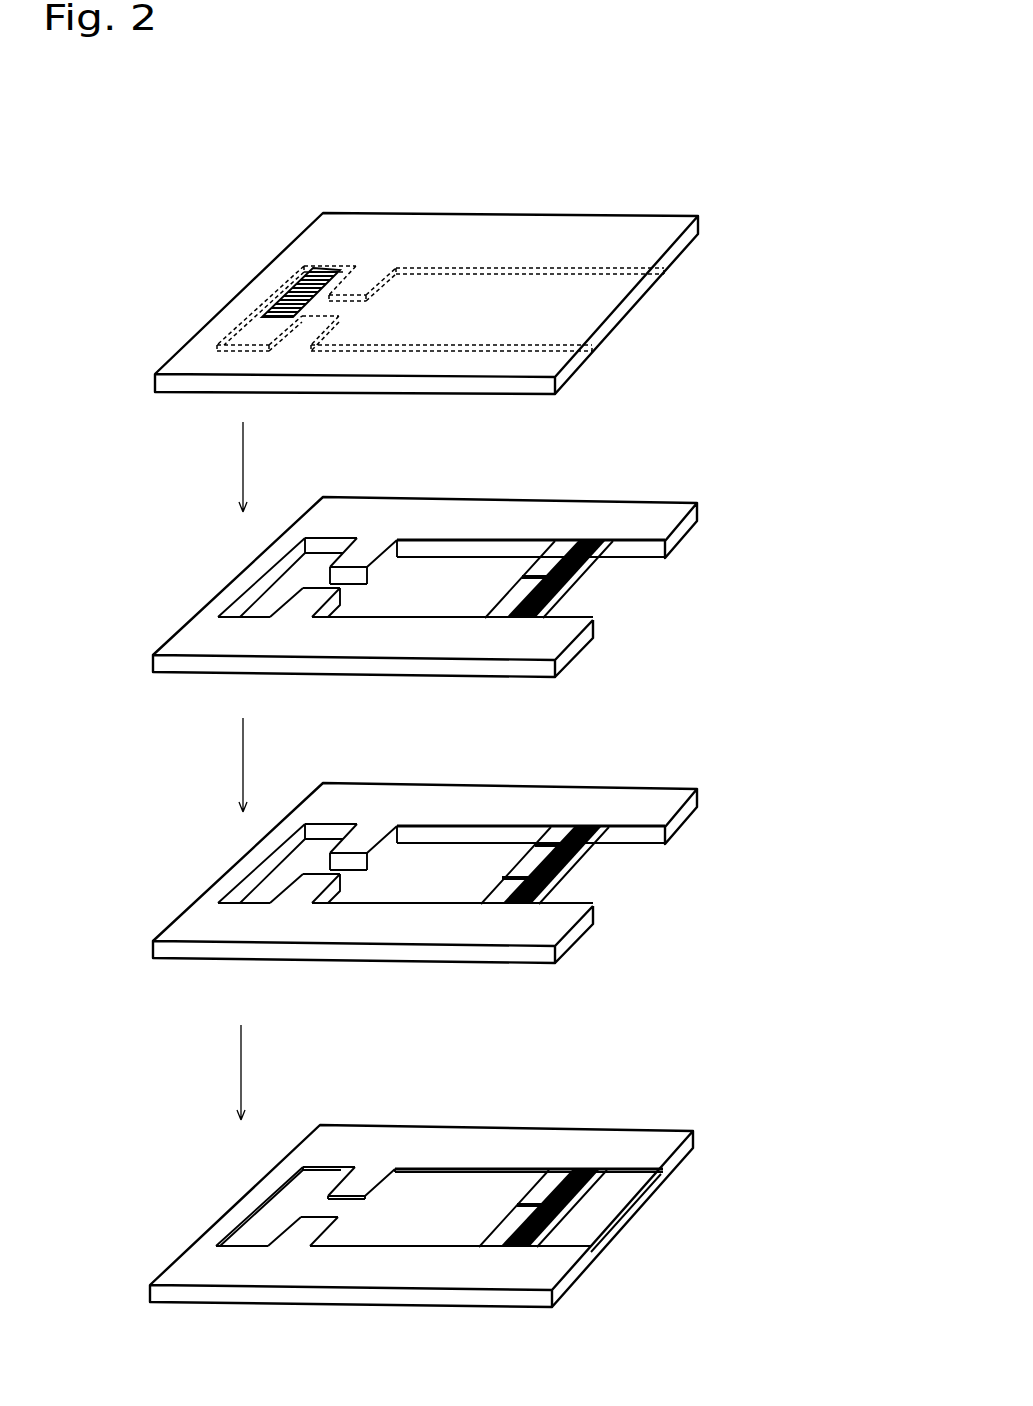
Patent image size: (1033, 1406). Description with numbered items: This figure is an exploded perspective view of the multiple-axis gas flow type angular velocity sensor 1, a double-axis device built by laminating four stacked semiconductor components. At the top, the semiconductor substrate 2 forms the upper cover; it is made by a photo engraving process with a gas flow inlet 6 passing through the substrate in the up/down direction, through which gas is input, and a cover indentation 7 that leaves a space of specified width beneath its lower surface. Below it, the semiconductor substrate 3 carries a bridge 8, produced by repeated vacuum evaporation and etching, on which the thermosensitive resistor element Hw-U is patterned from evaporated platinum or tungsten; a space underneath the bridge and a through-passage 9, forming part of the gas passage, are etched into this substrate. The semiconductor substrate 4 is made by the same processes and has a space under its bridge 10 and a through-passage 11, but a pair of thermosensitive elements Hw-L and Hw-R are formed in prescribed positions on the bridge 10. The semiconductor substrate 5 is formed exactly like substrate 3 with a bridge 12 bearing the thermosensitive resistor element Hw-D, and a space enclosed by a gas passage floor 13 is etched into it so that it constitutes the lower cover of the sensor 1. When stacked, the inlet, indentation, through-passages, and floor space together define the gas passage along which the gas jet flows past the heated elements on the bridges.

The multiple-axis gas flow type angular velocity sensor 1 is at (380, 173).
The semiconductor substrate 2 is at (460, 227).
The semiconductor substrate 3 is at (470, 510).
The semiconductor substrate 4 is at (490, 783).
The semiconductor substrate 5 is at (465, 1145).
The gas flow inlet 6 is at (287, 290).
The cover indentation 7 is at (580, 300).
The bridge 8 is at (585, 568).
The through-passage 9 is at (413, 607).
The bridge 10 is at (595, 850).
The through-passage 11 is at (413, 893).
The bridge 12 is at (582, 1197).
The gas passage floor 13 is at (413, 1236).
The thermosensitive resistor element Hw-U is at (533, 577).
The thermosensitive element Hw-L is at (547, 843).
The thermosensitive element Hw-R is at (517, 877).
The thermosensitive resistor element Hw-D is at (528, 1205).